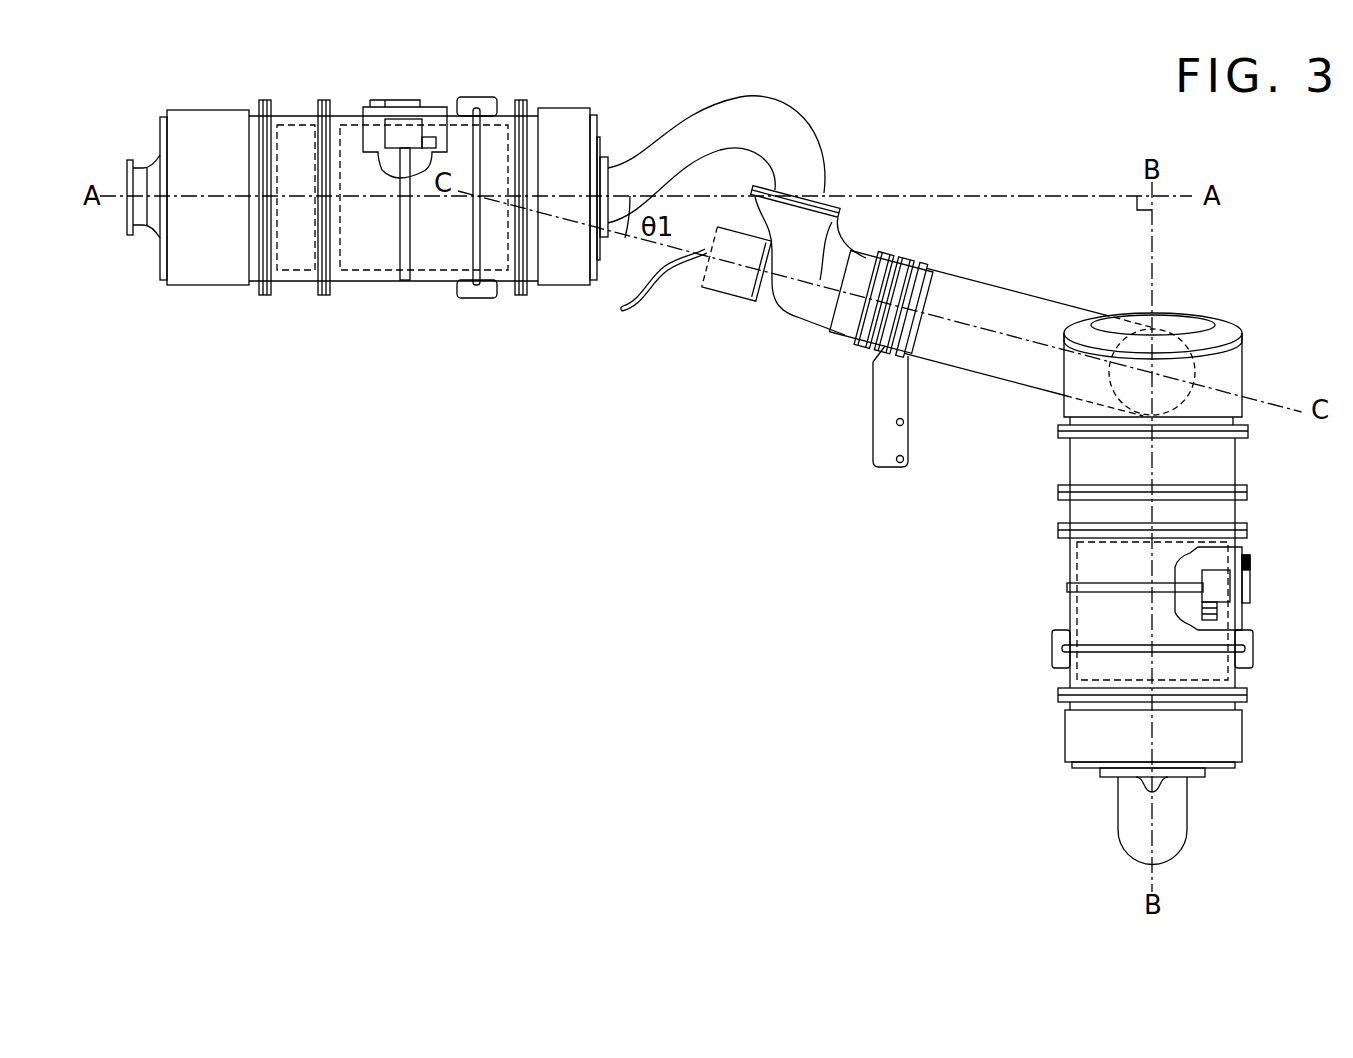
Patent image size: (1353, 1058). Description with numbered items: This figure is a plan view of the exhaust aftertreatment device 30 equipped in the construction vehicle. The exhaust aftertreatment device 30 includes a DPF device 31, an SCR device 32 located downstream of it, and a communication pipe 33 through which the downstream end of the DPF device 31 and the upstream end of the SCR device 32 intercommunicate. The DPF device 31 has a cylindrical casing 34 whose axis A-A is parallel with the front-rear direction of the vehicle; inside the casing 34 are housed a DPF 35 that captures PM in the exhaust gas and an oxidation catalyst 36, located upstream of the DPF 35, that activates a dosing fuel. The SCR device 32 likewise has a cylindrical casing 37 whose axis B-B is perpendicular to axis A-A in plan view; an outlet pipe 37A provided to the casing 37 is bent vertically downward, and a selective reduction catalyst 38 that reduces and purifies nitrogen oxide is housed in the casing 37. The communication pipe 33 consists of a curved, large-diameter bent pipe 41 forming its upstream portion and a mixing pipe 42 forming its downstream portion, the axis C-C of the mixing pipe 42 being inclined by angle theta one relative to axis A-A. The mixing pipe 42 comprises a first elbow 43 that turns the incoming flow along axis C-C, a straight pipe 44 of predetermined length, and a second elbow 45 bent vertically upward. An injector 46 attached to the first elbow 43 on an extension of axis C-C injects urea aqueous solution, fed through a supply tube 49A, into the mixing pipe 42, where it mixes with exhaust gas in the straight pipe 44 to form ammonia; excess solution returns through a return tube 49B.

The exhaust aftertreatment device 30 is at (698, 398).
The DPF device 31 is at (367, 197).
The SCR device 32 is at (1150, 559).
The communication pipe 33 is at (946, 280).
The cylindrical casing 34 is at (208, 285).
The DPF 35 is at (372, 268).
The oxidation catalyst 36 is at (295, 270).
The cylindrical casing 37 is at (1083, 735).
The outlet pipe 37A is at (1125, 825).
The selective reduction catalyst 38 is at (1082, 610).
The bent pipe 41 is at (765, 108).
The mixing pipe 42 is at (1169, 328).
The first elbow 43 is at (840, 249).
The straight pipe 44 is at (990, 293).
The second elbow 45 is at (1198, 368).
The injector 46 is at (725, 300).
The supply tube 49A is at (644, 320).
The return tube 49B is at (645, 306).